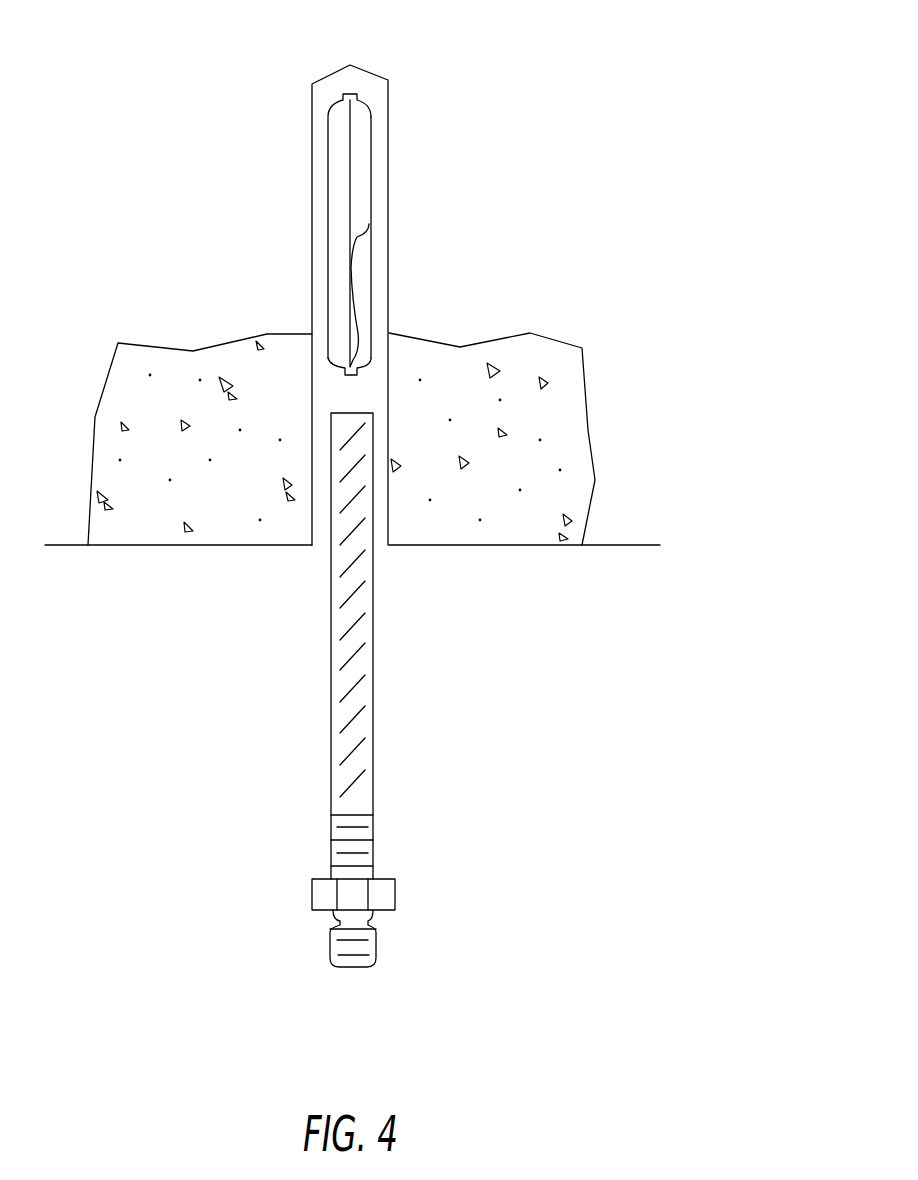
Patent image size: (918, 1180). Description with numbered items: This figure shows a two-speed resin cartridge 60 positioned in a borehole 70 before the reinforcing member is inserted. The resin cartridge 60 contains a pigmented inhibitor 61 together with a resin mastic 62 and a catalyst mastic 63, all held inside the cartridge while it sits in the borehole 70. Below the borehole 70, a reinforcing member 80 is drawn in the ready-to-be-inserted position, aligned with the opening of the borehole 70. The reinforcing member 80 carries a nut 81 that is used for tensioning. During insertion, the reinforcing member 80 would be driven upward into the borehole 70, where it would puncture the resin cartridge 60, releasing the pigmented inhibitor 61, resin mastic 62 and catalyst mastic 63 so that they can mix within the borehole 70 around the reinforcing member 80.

The borehole 70 is at (365, 90).
The resin cartridge 60 is at (329, 172).
The pigmented inhibitor 61 is at (361, 268).
The resin mastic 62 is at (371, 152).
The catalyst mastic 63 is at (340, 267).
The reinforcing member 80 is at (373, 646).
The nut 81 is at (395, 892).